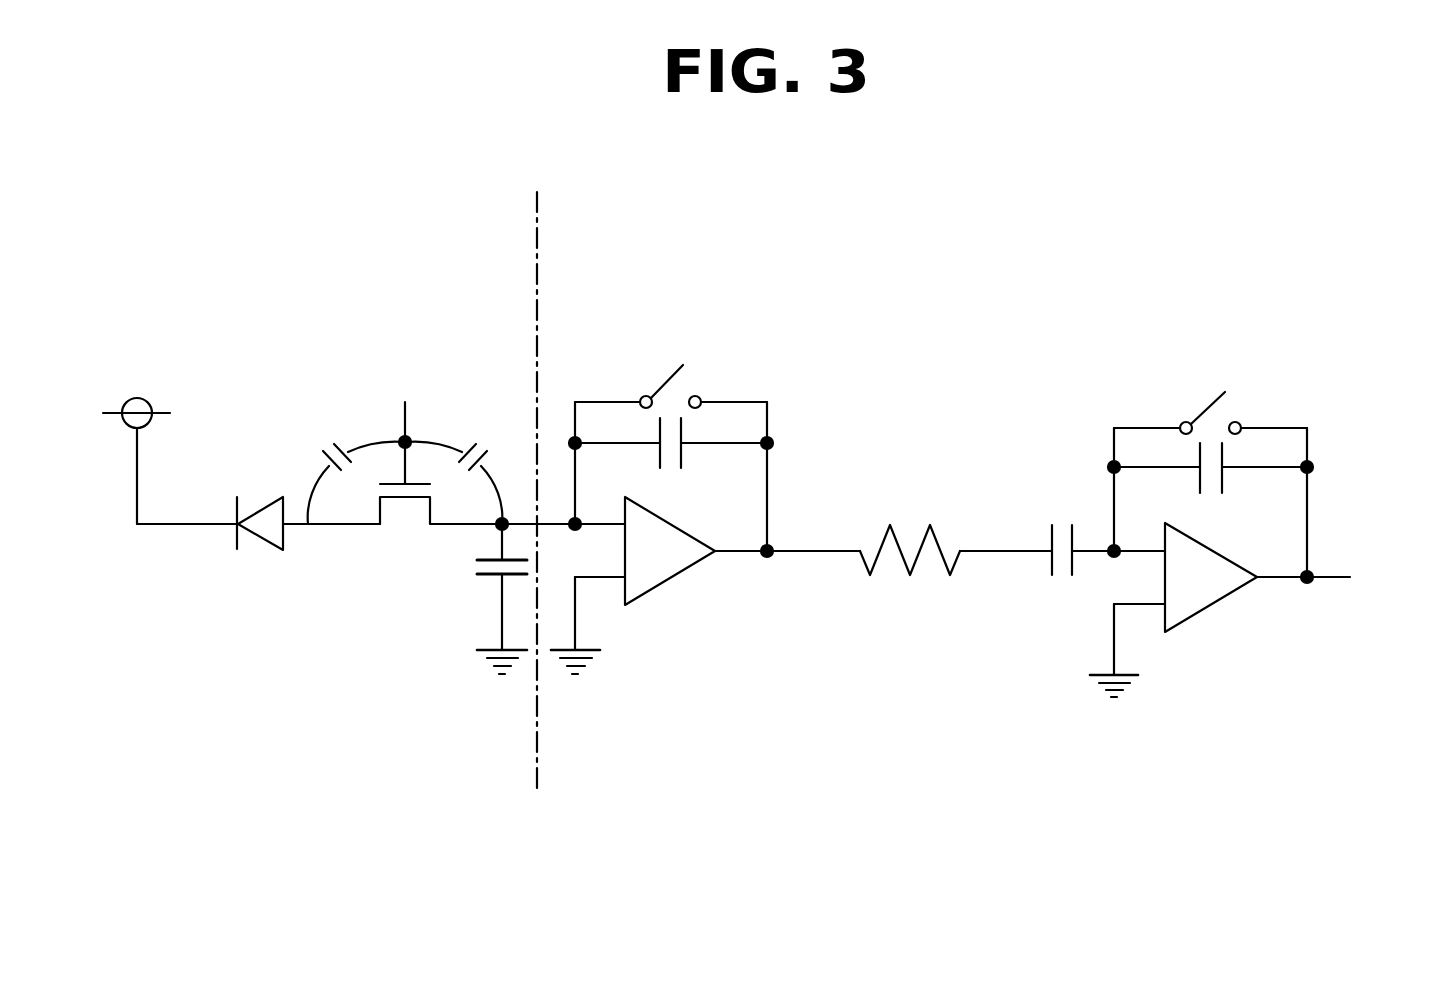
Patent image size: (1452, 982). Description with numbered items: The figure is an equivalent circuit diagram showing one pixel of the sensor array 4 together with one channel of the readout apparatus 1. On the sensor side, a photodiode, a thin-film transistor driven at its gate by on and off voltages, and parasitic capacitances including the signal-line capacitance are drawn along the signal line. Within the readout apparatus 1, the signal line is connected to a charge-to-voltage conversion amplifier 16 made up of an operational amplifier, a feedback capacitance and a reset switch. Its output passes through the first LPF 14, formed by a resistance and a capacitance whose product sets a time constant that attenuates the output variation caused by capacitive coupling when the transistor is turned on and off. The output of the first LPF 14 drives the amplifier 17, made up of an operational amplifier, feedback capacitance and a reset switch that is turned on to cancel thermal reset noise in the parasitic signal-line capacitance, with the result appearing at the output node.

The sensor array 4 is at (376, 230).
The readout apparatus 1 is at (745, 230).
The charge-to-voltage conversion amplifier 16 is at (680, 606).
The first LPF 14 is at (986, 607).
The amplifier 17 is at (1222, 638).